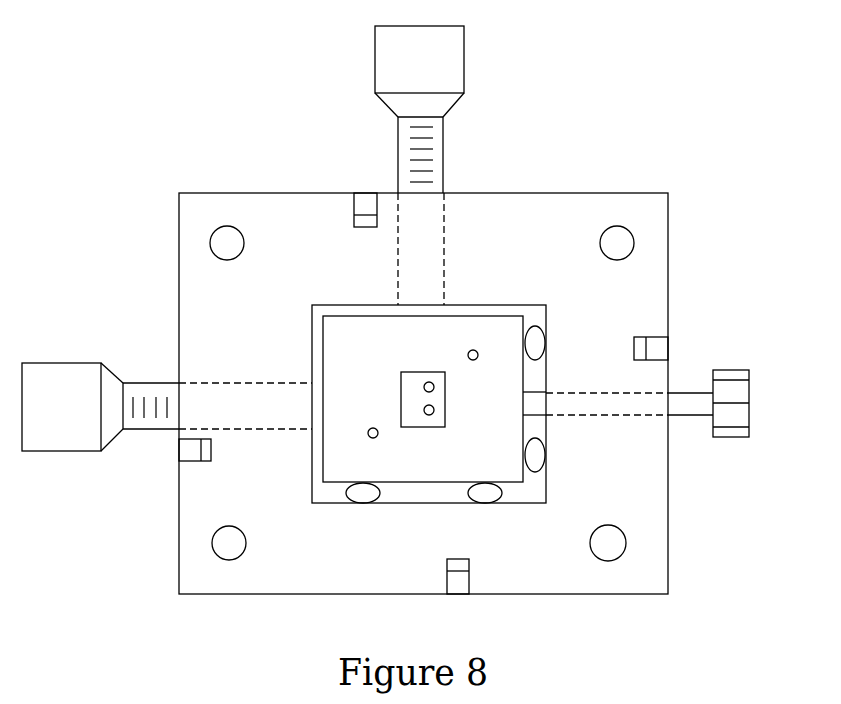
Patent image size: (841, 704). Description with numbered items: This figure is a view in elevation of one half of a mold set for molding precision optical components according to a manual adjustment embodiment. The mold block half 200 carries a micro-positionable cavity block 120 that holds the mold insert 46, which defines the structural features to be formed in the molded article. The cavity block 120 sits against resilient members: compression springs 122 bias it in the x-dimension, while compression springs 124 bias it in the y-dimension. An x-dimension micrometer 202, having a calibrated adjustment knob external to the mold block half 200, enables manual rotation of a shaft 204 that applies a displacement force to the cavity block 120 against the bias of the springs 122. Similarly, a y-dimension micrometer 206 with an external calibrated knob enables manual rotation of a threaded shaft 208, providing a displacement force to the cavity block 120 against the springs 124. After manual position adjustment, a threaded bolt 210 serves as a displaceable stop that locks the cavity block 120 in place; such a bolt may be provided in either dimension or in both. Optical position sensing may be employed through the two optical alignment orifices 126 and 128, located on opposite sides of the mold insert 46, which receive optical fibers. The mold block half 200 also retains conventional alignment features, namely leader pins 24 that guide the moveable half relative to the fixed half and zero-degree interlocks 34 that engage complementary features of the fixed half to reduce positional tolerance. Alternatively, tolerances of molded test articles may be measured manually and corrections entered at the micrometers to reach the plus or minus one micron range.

The mold block half 200 is at (268, 583).
The leader pins 24 is at (222, 542).
The y-dimension micrometer 206 is at (464, 93).
The threaded shaft 208 is at (447, 292).
The x-dimension micrometer 202 is at (89, 368).
The shaft 204 is at (275, 380).
The zero-degree interlocks 34 is at (197, 452).
The micro-positionable cavity block 120 is at (335, 342).
The compression springs 122 is at (547, 333).
The compression springs 124 is at (473, 503).
The mold insert 46 is at (437, 382).
The optical alignment orifice 128 is at (498, 363).
The optical alignment orifice 126 is at (379, 436).
The threaded bolt 210 is at (743, 396).